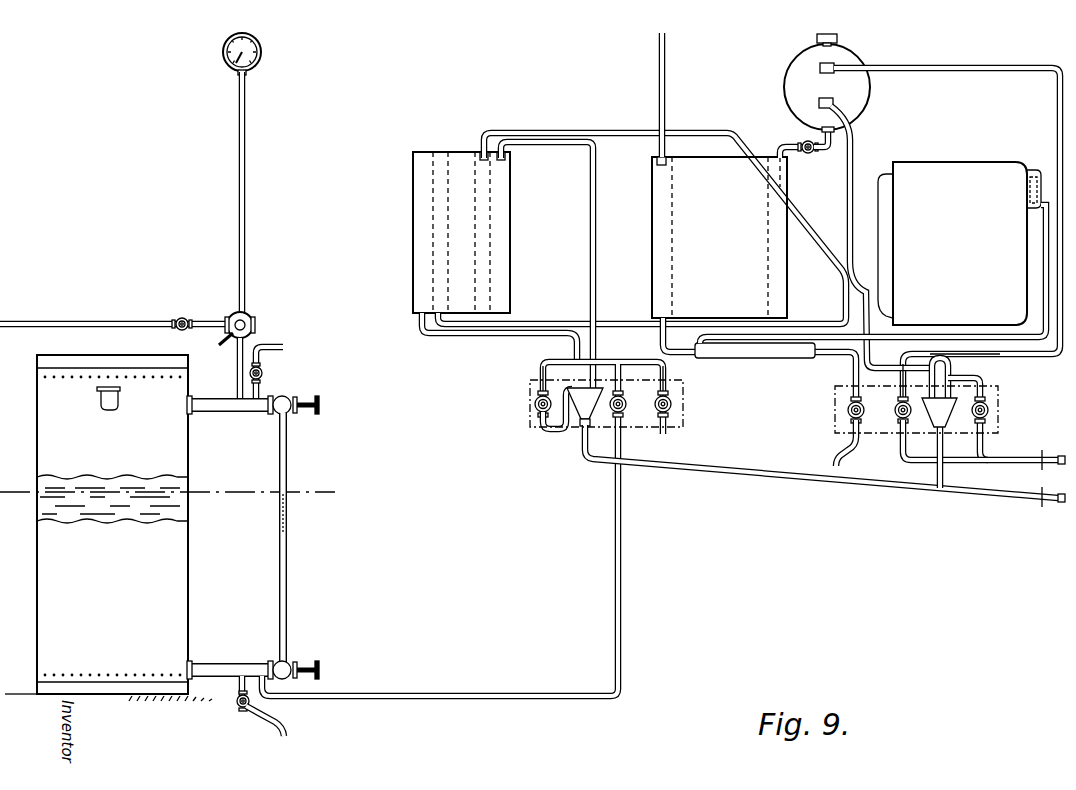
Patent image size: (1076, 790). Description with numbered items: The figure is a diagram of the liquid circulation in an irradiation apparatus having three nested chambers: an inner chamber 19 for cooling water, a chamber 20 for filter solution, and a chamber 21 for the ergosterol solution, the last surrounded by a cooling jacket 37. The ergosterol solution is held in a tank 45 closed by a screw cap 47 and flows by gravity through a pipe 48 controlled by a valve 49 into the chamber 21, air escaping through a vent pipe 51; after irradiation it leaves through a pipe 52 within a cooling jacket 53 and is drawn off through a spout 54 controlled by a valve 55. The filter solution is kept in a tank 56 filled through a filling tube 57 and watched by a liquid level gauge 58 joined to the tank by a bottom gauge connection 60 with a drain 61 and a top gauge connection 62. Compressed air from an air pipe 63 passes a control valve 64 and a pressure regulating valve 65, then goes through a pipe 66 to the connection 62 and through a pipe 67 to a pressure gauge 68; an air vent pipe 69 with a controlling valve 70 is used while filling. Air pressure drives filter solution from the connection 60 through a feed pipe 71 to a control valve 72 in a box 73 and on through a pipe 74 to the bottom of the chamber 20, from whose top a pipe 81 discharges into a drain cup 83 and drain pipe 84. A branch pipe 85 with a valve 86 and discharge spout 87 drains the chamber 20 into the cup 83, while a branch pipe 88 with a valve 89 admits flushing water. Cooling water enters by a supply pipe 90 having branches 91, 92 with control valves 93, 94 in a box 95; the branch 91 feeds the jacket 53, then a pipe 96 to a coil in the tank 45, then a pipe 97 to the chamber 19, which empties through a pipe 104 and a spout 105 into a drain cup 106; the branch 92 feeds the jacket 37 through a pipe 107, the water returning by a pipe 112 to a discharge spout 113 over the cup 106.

The chamber 19 is at (444, 163).
The chamber 20 is at (408, 266).
The chamber 21 is at (647, 259).
The cooling jacket 37 is at (878, 253).
The tank 45 is at (785, 77).
The screw cap 47 is at (815, 37).
The pipe 48 is at (823, 146).
The valve 49 is at (800, 142).
The vent pipe 51 is at (666, 100).
The pipe 52 is at (658, 341).
The cooling jacket 53 is at (753, 356).
The spout 54 is at (831, 458).
The valve 55 is at (845, 409).
The tank 56 is at (188, 606).
The filling tube 57 is at (116, 402).
The liquid level gauge 58 is at (287, 597).
The bottom gauge connection 60 is at (213, 663).
The drain 61 is at (286, 730).
The top gauge connection 62 is at (229, 411).
The air pipe 63 is at (78, 322).
The control valve 64 is at (182, 332).
The pressure regulating valve 65 is at (255, 327).
The pipe 66 is at (237, 364).
The pipe 67 is at (246, 172).
The pressure gauge 68 is at (262, 62).
The air vent pipe 69 is at (287, 348).
The controlling valve 70 is at (264, 370).
The feed pipe 71 is at (400, 692).
The control valve 72 is at (627, 402).
The box 73 is at (684, 395).
The pipe 74 is at (494, 338).
The pipe 81 is at (565, 146).
The drain cup 83 is at (580, 411).
The drain pipe 84 is at (711, 476).
The branch pipe 85 is at (540, 367).
The valve 86 is at (534, 404).
The discharge spout 87 is at (578, 385).
The branch pipe 88 is at (670, 375).
The valve 89 is at (672, 404).
The supply pipe 90 is at (990, 461).
The branch 91 is at (826, 373).
The branch 92 is at (900, 442).
The control valve 93 is at (985, 412).
The control valve 94 is at (892, 413).
The box 95 is at (990, 409).
The pipe 96 is at (1057, 155).
The pipe 97 is at (847, 180).
The pipe 104 is at (511, 130).
The spout 105 is at (983, 377).
The drain cup 106 is at (940, 436).
The pipe 107 is at (972, 352).
The pipe 112 is at (1044, 235).
The discharge spout 113 is at (899, 381).